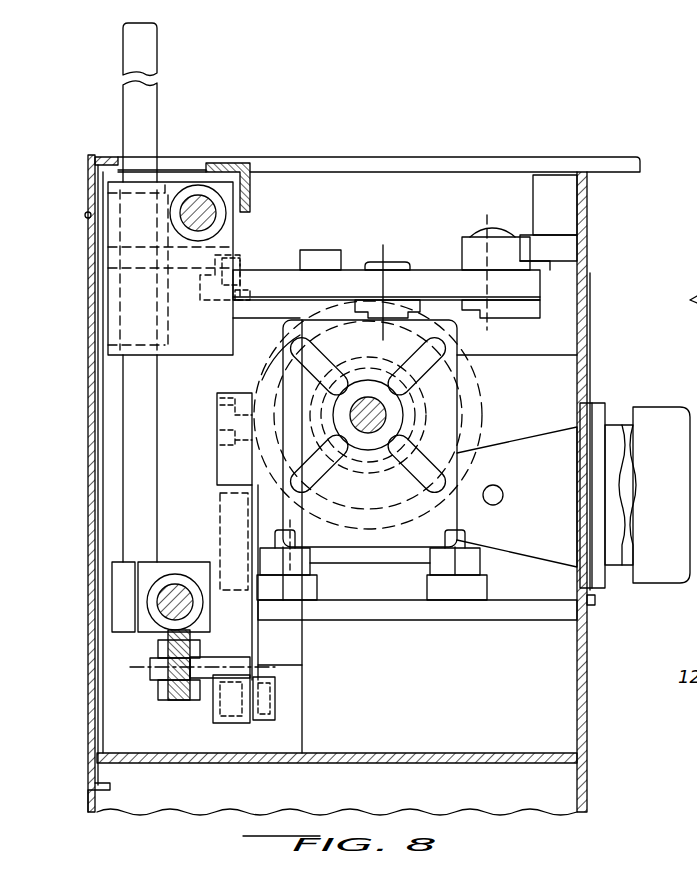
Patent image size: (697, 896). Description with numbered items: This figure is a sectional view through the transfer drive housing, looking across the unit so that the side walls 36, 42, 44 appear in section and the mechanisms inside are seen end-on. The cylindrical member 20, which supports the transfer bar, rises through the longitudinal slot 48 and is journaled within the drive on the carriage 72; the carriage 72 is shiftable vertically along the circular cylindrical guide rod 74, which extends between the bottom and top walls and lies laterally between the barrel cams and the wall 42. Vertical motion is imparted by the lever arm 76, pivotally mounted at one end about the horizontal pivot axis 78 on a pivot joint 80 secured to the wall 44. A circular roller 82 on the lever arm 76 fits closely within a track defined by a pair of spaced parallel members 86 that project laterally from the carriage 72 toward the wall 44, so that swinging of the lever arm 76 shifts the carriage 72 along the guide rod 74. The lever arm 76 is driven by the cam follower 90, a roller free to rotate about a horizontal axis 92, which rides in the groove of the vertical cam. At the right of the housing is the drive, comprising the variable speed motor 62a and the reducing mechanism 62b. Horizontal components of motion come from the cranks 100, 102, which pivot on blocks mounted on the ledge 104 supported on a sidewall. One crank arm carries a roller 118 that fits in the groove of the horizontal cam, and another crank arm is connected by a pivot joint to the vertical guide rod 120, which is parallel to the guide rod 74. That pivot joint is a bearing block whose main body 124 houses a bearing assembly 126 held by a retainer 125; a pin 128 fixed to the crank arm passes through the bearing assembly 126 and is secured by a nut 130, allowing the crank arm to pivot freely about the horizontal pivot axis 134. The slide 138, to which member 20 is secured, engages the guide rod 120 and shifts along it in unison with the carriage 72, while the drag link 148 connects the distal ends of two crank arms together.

The cylindrical member 20 is at (157, 430).
The side wall 36 is at (460, 765).
The side wall 42 is at (88, 503).
The side wall 44 is at (588, 698).
The longitudinal slot 48 is at (195, 165).
The variable speed motor 62a is at (652, 407).
The reducing mechanism 62b is at (457, 417).
The carriage 72 is at (160, 180).
The guide rod 74 is at (210, 205).
The lever arm 76 is at (445, 270).
The pivot axis 78 is at (497, 230).
The pivot joint 80 is at (470, 226).
The roller 82 is at (250, 262).
The parallel members 86 is at (305, 257).
The cam follower 90 is at (345, 300).
The horizontal axis 92 is at (385, 258).
The crank 100 is at (215, 454).
The crank 102 is at (218, 508).
The ledge 104 is at (450, 622).
The roller 118 is at (265, 380).
The guide rod 120 is at (155, 591).
The main body 124 is at (195, 700).
The retainer 125 is at (160, 638).
The bearing assembly 126 is at (168, 700).
The pin 128 is at (200, 680).
The nut 130 is at (155, 680).
The horizontal pivot axis 134 is at (262, 665).
The slide 138 is at (165, 562).
The drag link 148 is at (280, 703).